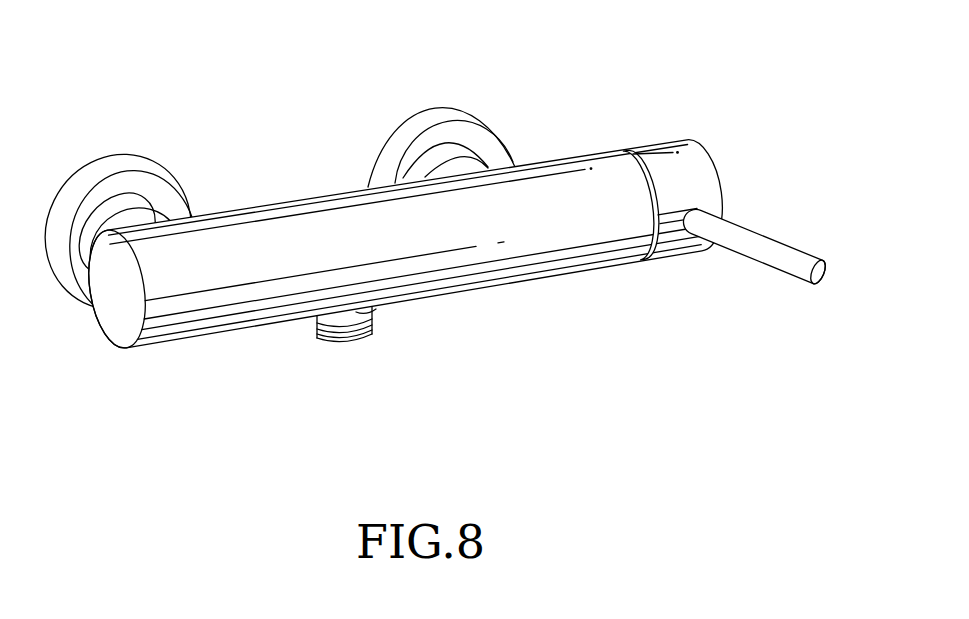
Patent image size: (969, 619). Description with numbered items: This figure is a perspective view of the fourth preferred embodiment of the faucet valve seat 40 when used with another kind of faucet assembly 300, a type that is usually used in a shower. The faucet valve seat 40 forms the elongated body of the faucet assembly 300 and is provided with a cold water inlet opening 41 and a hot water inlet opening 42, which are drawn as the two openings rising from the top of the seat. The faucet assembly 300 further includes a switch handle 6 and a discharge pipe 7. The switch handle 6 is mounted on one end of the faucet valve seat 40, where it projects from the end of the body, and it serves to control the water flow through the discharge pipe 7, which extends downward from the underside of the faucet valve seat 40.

The faucet assembly 300 is at (423, 216).
The switch handle 6 is at (703, 184).
The discharge pipe 7 is at (372, 312).
The faucet valve seat 40 is at (530, 298).
The cold water inlet opening 41 is at (111, 163).
The hot water inlet opening 42 is at (442, 117).